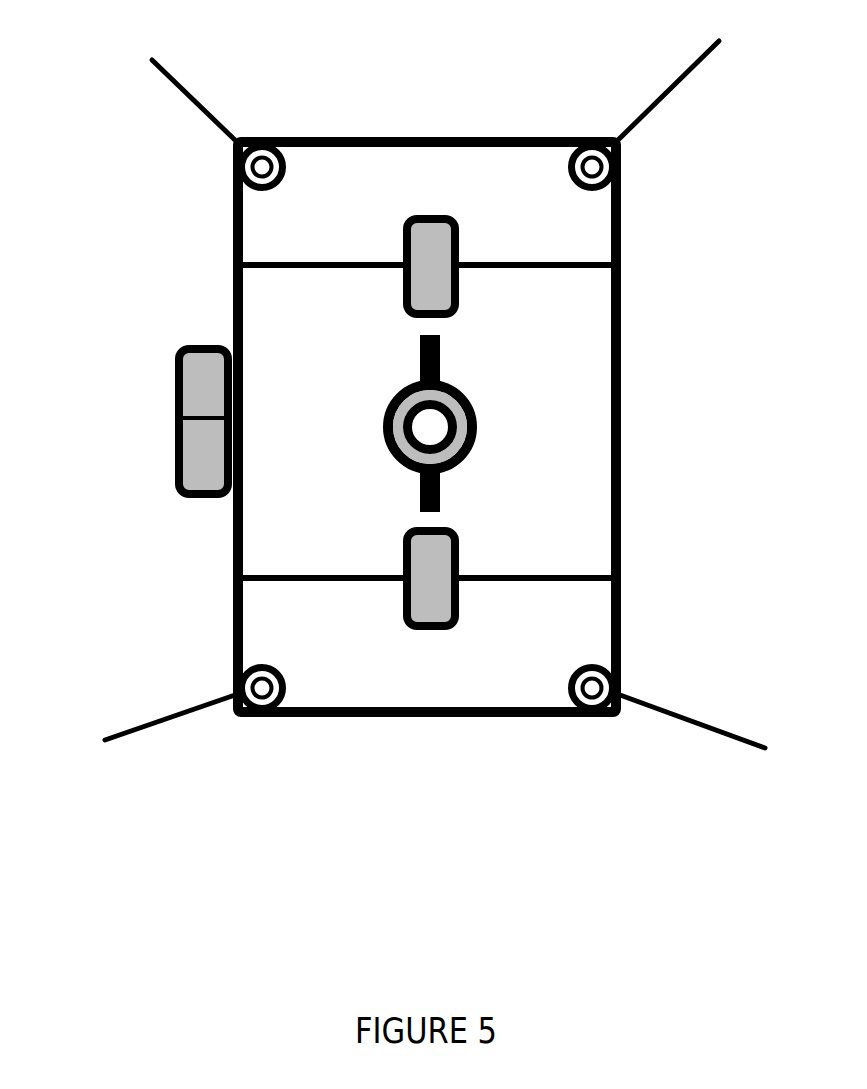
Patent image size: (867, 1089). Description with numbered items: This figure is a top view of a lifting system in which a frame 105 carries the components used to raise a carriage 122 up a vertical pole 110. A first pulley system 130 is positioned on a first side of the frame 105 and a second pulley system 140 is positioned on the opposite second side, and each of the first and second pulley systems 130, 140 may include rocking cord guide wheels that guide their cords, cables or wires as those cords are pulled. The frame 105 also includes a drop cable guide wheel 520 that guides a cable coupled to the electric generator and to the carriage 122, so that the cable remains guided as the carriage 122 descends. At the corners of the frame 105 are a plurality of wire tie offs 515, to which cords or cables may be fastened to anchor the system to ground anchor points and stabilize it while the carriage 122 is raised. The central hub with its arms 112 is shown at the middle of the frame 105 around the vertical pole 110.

The frame 105 is at (237, 210).
The vertical pole 110 is at (393, 405).
The arms 112 is at (441, 372).
The carriage 122 is at (238, 550).
The first pulley system 130 is at (480, 319).
The second pulley system 140 is at (480, 510).
The wire tie offs 515 is at (447, 406).
The drop cable guide wheel 520 is at (150, 462).